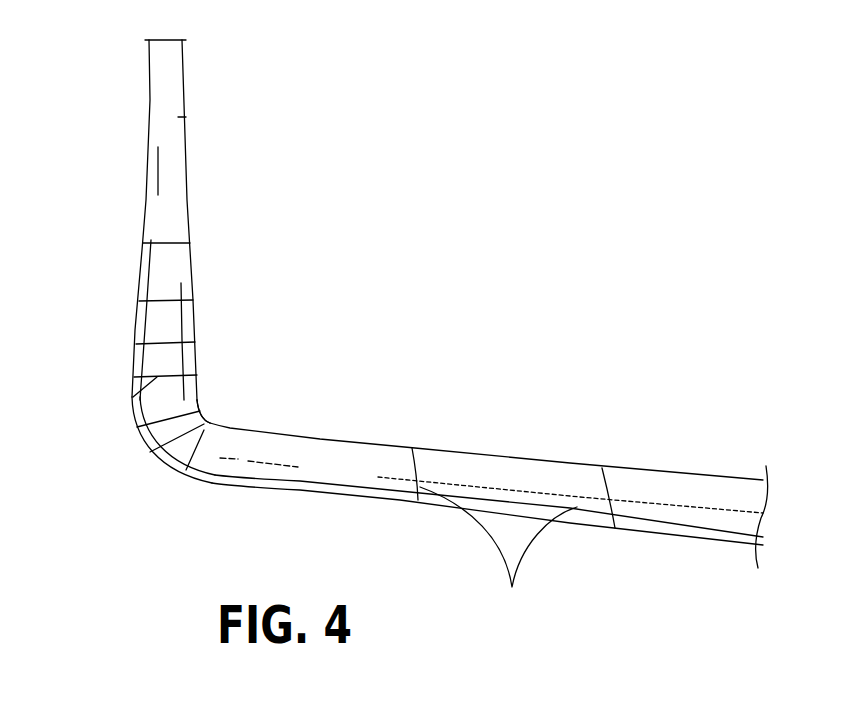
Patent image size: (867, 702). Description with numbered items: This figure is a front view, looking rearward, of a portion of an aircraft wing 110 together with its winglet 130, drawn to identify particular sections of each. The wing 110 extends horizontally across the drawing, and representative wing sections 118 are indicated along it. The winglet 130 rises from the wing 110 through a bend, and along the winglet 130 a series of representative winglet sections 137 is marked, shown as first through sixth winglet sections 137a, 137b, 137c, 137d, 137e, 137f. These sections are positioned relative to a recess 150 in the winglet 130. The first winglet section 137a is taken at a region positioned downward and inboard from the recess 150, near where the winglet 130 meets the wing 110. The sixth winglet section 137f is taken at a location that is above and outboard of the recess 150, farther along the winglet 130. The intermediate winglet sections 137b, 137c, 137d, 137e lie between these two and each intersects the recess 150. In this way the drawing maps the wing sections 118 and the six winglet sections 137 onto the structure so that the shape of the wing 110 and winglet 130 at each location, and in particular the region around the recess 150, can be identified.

The wing 110 is at (698, 482).
The wing sections 118 is at (498, 554).
The winglet 130 is at (183, 117).
The winglet sections 137 is at (233, 390).
The first winglet section 137a is at (197, 455).
The second winglet section 137b is at (150, 460).
The third winglet section 137c is at (133, 395).
The fourth winglet section 137d is at (168, 348).
The fifth winglet section 137e is at (170, 305).
The sixth winglet section 137f is at (176, 244).
The recess 150 is at (199, 337).